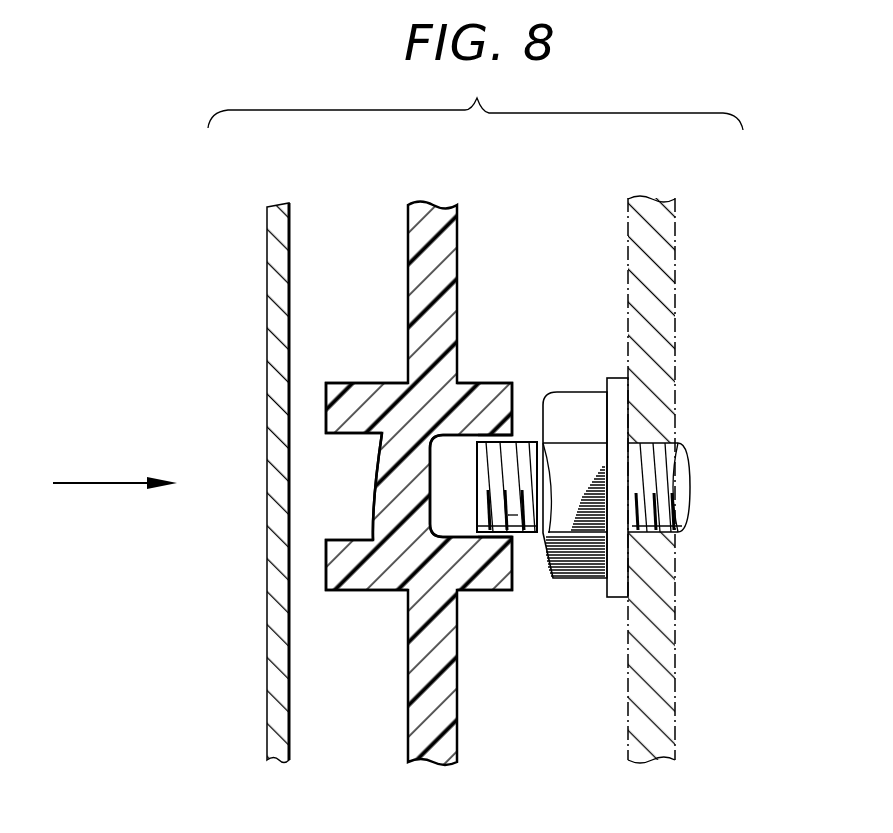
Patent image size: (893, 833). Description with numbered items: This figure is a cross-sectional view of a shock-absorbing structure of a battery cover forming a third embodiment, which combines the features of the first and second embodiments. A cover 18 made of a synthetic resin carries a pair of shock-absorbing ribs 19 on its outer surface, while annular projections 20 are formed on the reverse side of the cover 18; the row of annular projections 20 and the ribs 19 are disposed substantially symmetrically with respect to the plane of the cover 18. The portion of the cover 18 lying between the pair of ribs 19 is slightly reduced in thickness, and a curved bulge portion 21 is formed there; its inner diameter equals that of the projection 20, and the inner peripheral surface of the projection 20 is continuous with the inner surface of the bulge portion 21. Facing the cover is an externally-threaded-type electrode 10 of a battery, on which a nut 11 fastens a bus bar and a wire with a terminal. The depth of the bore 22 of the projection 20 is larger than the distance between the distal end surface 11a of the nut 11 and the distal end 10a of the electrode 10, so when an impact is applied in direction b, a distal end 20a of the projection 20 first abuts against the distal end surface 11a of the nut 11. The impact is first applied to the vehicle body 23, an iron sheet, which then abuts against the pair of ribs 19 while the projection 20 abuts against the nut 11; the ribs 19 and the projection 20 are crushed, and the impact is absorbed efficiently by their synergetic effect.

The electrode 10 is at (668, 470).
The distal end of the electrode 10a is at (485, 500).
The nut 11 is at (583, 573).
The distal end surface of the nut 11a is at (541, 415).
The cover 18 is at (400, 245).
The shock-absorbing ribs 19 is at (382, 433).
The annular projection 20 is at (513, 575).
The distal end of the projection 20a is at (525, 407).
The bulge portion 21 is at (373, 540).
The bore 22 is at (452, 453).
The vehicle body 23 is at (267, 656).
The mounting direction b is at (103, 483).